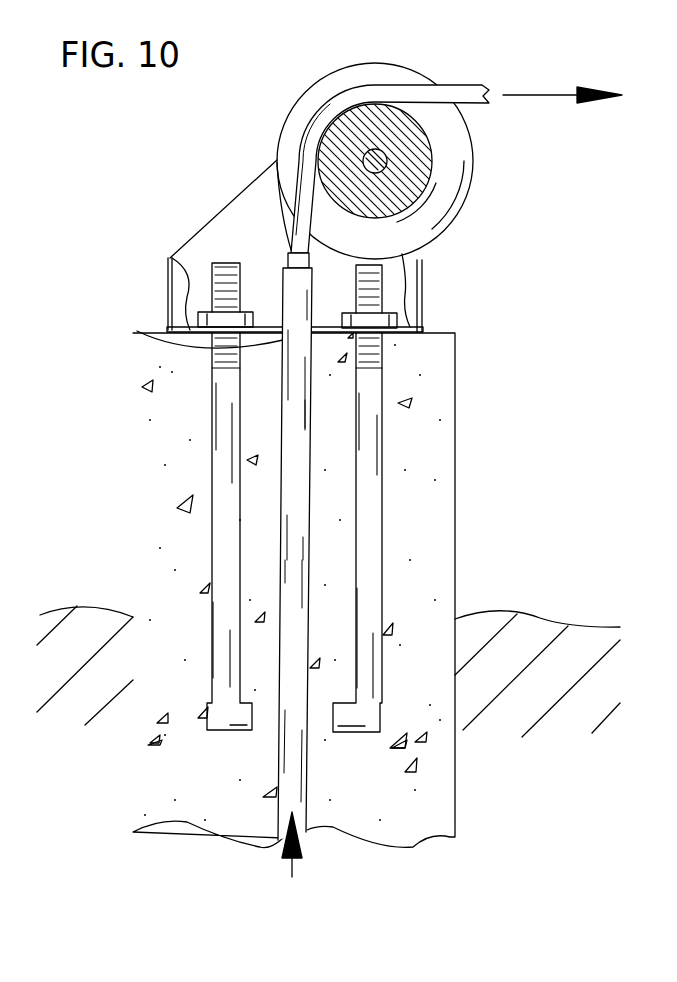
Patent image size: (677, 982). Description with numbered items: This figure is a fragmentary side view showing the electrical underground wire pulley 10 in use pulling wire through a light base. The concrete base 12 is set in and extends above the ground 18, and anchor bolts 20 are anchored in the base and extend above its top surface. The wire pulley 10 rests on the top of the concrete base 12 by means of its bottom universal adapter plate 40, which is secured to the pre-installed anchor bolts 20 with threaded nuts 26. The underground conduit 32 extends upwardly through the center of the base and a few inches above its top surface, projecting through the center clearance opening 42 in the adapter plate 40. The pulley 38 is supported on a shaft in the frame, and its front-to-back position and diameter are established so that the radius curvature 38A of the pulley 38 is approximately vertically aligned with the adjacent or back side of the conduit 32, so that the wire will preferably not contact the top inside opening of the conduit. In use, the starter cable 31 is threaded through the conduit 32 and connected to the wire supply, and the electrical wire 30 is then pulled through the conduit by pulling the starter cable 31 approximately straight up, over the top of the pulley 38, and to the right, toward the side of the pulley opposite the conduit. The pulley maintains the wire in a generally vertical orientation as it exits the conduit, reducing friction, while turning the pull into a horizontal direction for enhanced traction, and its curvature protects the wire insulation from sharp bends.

The electrical underground wire pulley 10 is at (190, 183).
The concrete base 12 is at (455, 497).
The ground 18 is at (538, 618).
The anchor bolts 20 is at (212, 283).
The threaded nuts 26 is at (202, 323).
The electrical wire 30 is at (290, 255).
The starter cable 31 is at (310, 112).
The underground conduit 32 is at (310, 450).
The pulley 38 is at (466, 197).
The radius curvature 38A is at (456, 156).
The bottom universal adapter plate 40 is at (395, 330).
The center clearance opening 42 is at (170, 340).